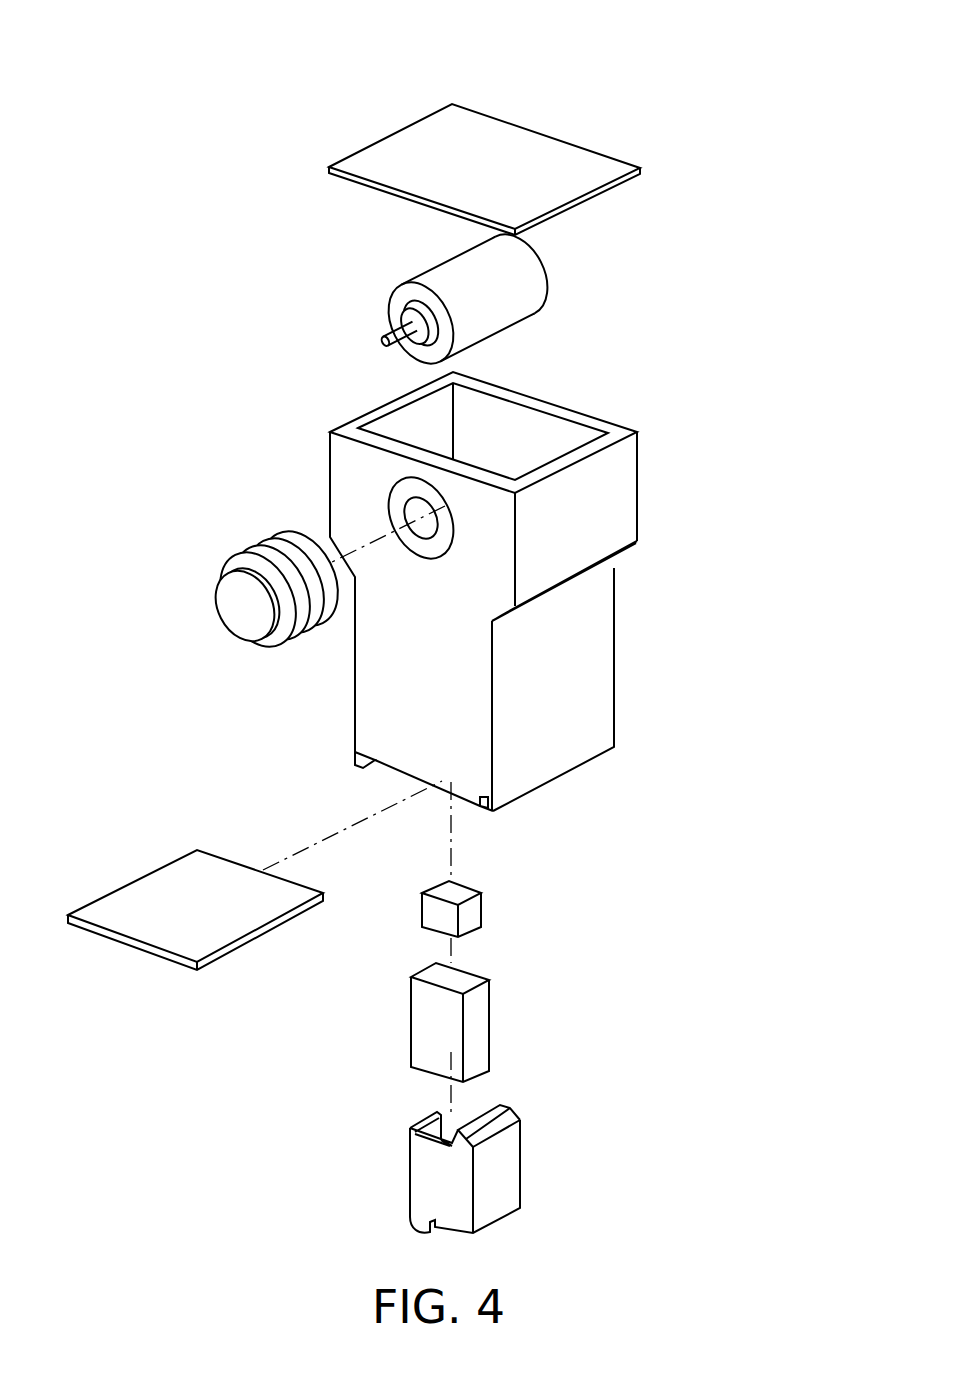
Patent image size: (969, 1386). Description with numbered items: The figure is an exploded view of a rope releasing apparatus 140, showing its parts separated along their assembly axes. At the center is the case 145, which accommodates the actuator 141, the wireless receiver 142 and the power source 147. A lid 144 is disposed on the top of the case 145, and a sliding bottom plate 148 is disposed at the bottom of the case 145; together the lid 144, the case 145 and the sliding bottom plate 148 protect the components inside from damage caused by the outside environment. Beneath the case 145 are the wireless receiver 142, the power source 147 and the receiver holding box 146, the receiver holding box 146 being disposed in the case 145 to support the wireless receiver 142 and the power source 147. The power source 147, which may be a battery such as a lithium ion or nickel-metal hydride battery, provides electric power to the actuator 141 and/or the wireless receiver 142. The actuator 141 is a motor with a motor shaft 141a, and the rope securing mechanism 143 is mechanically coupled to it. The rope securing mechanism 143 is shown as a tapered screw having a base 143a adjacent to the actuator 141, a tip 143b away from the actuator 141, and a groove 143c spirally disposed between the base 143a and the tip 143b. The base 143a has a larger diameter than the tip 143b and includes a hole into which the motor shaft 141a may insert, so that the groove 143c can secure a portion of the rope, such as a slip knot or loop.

The rope releasing apparatus 140 is at (297, 102).
The actuator 141 is at (527, 283).
The motor shaft 141a is at (390, 322).
The wireless receiver 142 is at (472, 912).
The rope securing mechanism 143 is at (272, 595).
The base 143a is at (293, 537).
The tip 143b is at (238, 603).
The groove 143c is at (275, 553).
The lid 144 is at (497, 135).
The case 145 is at (622, 510).
The receiver holding box 146 is at (510, 1185).
The power source 147 is at (483, 1038).
The sliding bottom plate 148 is at (183, 878).